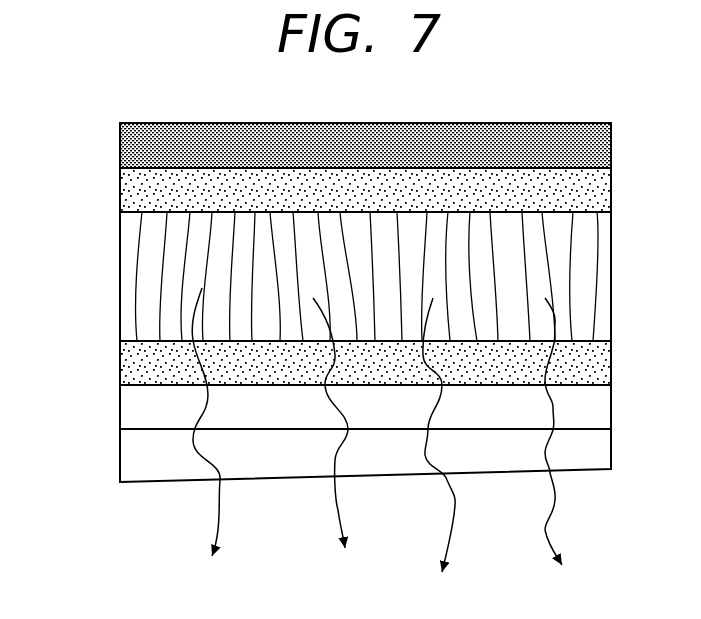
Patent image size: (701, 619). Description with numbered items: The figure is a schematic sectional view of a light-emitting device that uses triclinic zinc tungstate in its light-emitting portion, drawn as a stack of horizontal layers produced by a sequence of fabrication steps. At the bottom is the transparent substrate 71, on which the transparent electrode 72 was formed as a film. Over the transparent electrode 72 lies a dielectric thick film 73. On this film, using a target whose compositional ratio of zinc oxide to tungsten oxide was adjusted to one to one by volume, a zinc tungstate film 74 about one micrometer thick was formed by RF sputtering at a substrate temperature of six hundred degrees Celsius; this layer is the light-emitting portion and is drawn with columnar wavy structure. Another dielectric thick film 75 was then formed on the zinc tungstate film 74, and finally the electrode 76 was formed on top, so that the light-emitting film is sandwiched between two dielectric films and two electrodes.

The transparent substrate 71 is at (132, 457).
The transparent electrode 72 is at (132, 407).
The dielectric thick film 73 is at (132, 360).
The ZnWO4 film 74 is at (132, 280).
The dielectric thick film 75 is at (132, 192).
The electrode 76 is at (134, 150).